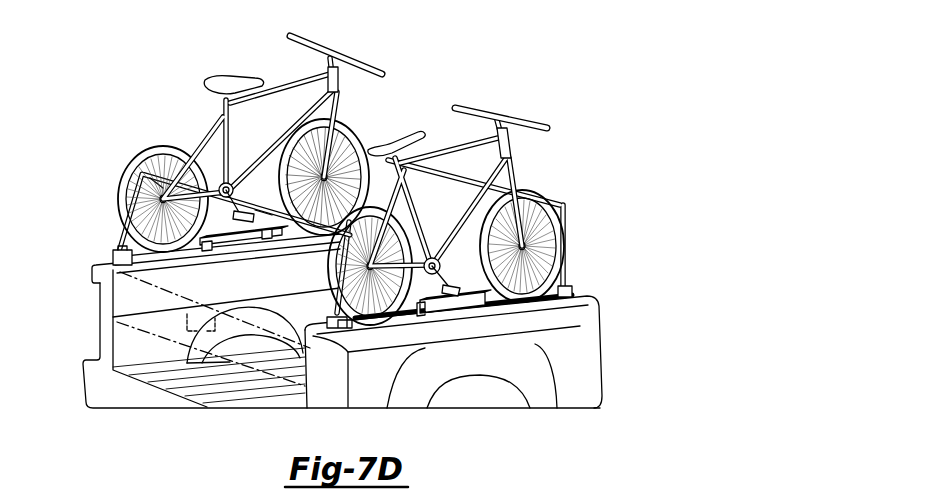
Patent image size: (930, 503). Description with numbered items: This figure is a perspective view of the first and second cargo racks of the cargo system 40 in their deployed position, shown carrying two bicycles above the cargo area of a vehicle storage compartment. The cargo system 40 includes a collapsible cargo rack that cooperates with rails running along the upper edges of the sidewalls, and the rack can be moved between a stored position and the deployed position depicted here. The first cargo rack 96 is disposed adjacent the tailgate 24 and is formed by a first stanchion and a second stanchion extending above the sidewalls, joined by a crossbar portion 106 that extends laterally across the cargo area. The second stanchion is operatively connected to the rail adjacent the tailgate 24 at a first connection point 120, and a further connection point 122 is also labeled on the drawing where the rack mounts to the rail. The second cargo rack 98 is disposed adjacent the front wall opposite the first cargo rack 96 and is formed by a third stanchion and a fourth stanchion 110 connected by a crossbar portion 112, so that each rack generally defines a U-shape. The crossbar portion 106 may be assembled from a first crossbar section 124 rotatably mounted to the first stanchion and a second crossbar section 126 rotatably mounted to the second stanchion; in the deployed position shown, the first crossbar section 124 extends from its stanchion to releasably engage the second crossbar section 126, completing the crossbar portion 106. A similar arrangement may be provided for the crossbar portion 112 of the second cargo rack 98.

The tailgate 24 is at (132, 349).
The cargo system 40 is at (335, 221).
The first cargo rack 96 is at (212, 183).
The second cargo rack 98 is at (474, 216).
The crossbar portion 106 is at (261, 219).
The fourth stanchion 110 is at (563, 246).
The crossbar portion 112 is at (505, 176).
The first connection point 120 is at (112, 256).
The second mounting block 122 is at (327, 320).
The first crossbar section 124 is at (163, 178).
The second crossbar section 126 is at (259, 208).